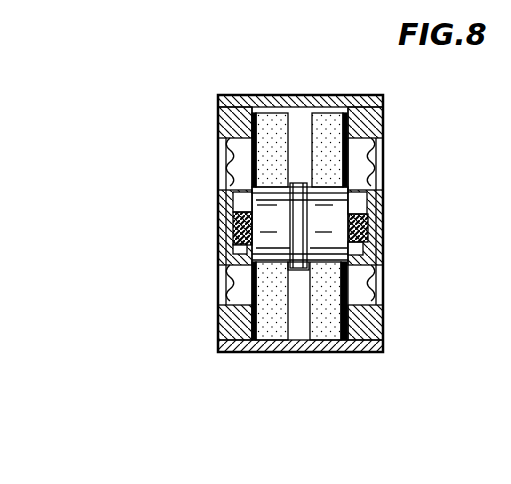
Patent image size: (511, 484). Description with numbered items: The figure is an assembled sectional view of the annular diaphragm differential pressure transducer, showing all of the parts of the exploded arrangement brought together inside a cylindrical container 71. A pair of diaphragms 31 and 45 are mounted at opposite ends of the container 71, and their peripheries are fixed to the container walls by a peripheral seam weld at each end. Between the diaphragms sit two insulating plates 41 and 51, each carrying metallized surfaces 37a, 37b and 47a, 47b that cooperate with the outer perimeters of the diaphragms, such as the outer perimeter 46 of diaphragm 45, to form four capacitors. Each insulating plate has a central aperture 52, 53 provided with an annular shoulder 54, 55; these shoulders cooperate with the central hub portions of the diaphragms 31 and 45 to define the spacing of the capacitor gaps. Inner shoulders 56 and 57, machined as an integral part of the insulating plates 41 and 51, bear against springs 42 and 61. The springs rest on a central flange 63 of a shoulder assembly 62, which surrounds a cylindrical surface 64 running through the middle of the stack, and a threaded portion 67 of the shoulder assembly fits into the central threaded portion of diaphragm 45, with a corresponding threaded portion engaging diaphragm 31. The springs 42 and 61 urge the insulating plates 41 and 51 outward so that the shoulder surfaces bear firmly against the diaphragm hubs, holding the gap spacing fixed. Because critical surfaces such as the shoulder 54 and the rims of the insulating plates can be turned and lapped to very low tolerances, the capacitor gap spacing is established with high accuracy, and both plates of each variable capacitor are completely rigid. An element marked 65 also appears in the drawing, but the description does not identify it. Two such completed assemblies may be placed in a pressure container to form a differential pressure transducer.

The diaphragm 31 is at (223, 300).
The cylindrical container 71 is at (385, 96).
The metallized surface 37b is at (258, 124).
The metallized surface 47b is at (362, 113).
The annular shoulder 54 is at (230, 170).
The shoulder assembly 62 is at (366, 165).
The annular shoulder 55 is at (370, 160).
The central flange 63 is at (228, 287).
The diaphragm 45 is at (373, 287).
The metallized surface 37a is at (252, 322).
The metallized surface 47a is at (351, 332).
The outer perimeter 46 is at (372, 332).
The spring 42 is at (226, 223).
The cylindrical surface 64 is at (232, 213).
The threaded portion 67 is at (367, 230).
The spring 61 is at (368, 222).
The inner shoulder 56 is at (283, 190).
The inner shoulder 57 is at (330, 189).
The insulating plate 41 is at (275, 333).
The insulating plate 51 is at (320, 334).
The central aperture 53 is at (352, 208).
The central aperture 52 is at (283, 240).
The right diaphragm layers 65 is at (362, 247).